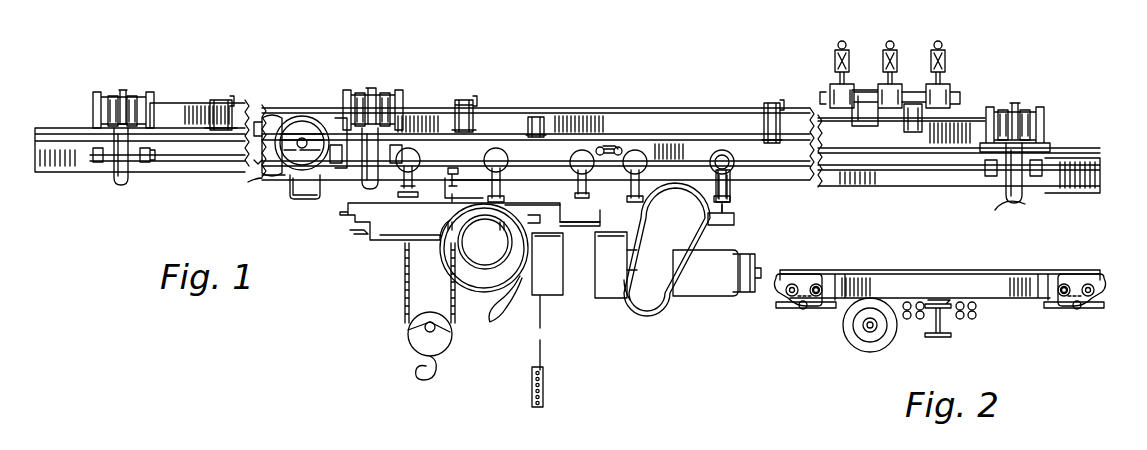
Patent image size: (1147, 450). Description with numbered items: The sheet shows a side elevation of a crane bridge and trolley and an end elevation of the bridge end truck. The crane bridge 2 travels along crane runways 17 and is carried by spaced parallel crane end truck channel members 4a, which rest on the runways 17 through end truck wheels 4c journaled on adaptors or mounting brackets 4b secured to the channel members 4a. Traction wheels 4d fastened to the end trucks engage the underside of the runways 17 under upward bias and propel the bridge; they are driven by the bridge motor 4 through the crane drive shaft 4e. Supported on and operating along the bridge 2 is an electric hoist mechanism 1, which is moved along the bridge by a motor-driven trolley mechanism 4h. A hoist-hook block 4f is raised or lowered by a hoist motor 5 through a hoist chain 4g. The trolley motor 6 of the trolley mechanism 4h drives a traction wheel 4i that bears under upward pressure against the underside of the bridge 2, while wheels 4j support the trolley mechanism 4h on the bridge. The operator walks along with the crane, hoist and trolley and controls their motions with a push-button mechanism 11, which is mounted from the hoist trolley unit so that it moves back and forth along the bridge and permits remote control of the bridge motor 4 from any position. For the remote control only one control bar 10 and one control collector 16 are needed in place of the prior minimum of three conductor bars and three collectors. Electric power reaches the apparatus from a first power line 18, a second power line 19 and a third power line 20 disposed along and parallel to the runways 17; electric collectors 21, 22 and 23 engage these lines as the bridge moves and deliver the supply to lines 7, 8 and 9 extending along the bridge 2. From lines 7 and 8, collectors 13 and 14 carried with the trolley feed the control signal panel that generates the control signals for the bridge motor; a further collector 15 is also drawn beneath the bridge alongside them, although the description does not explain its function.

In FIG. 1, the electric hoist mechanism 1 is at (371, 240).
In FIG. 1, the crane bridge 2 is at (1086, 184).
In FIG. 2, the crane bridge 2 is at (938, 340).
In FIG. 1, the bridge motor 4 is at (298, 118).
In FIG. 1, the crane end truck channel members 4a is at (95, 102).
In FIG. 2, the crane end truck channel members 4a is at (983, 272).
In FIG. 2, the adaptors or mounting brackets 4b is at (815, 318).
In FIG. 1, the end truck wheels 4c is at (112, 95).
In FIG. 2, the end truck wheels 4c is at (792, 284).
In FIG. 1, the traction wheels 4d is at (117, 182).
In FIG. 2, the traction wheels 4d is at (872, 352).
In FIG. 1, the crane drive shaft 4e is at (190, 165).
In FIG. 2, the crane drive shaft 4e is at (865, 328).
In FIG. 1, the hoist-hook block 4f is at (420, 344).
In FIG. 1, the hoist chain 4g is at (404, 292).
In FIG. 1, the motor-driven trolley mechanism 4h is at (530, 132).
In FIG. 1, the traction wheel 4i is at (738, 190).
In FIG. 1, the wheels 4j is at (718, 150).
In FIG. 1, the hoist motor 5 is at (500, 262).
In FIG. 1, the trolley motor 6 is at (636, 314).
In FIG. 2, the line 7 is at (908, 320).
In FIG. 2, the line 8 is at (921, 320).
In FIG. 2, the line 9 is at (961, 320).
In FIG. 2, the control bar 10 is at (973, 320).
In FIG. 1, the push-button mechanism 11 is at (544, 383).
In FIG. 1, the collector 13 is at (288, 182).
In FIG. 1, the collector 14 is at (260, 183).
In FIG. 1, the guide roller 15 is at (460, 148).
In FIG. 1, the control collector 16 is at (610, 147).
In FIG. 1, the crane runways 17 is at (124, 88).
In FIG. 2, the crane runways 17 is at (820, 284).
In FIG. 1, the first power line 18 is at (838, 42).
In FIG. 1, the second power line 19 is at (888, 42).
In FIG. 1, the third power line 20 is at (942, 44).
In FIG. 1, the electric collector 21 is at (829, 84).
In FIG. 1, the electric collector 22 is at (879, 84).
In FIG. 1, the electric collector 23 is at (928, 84).